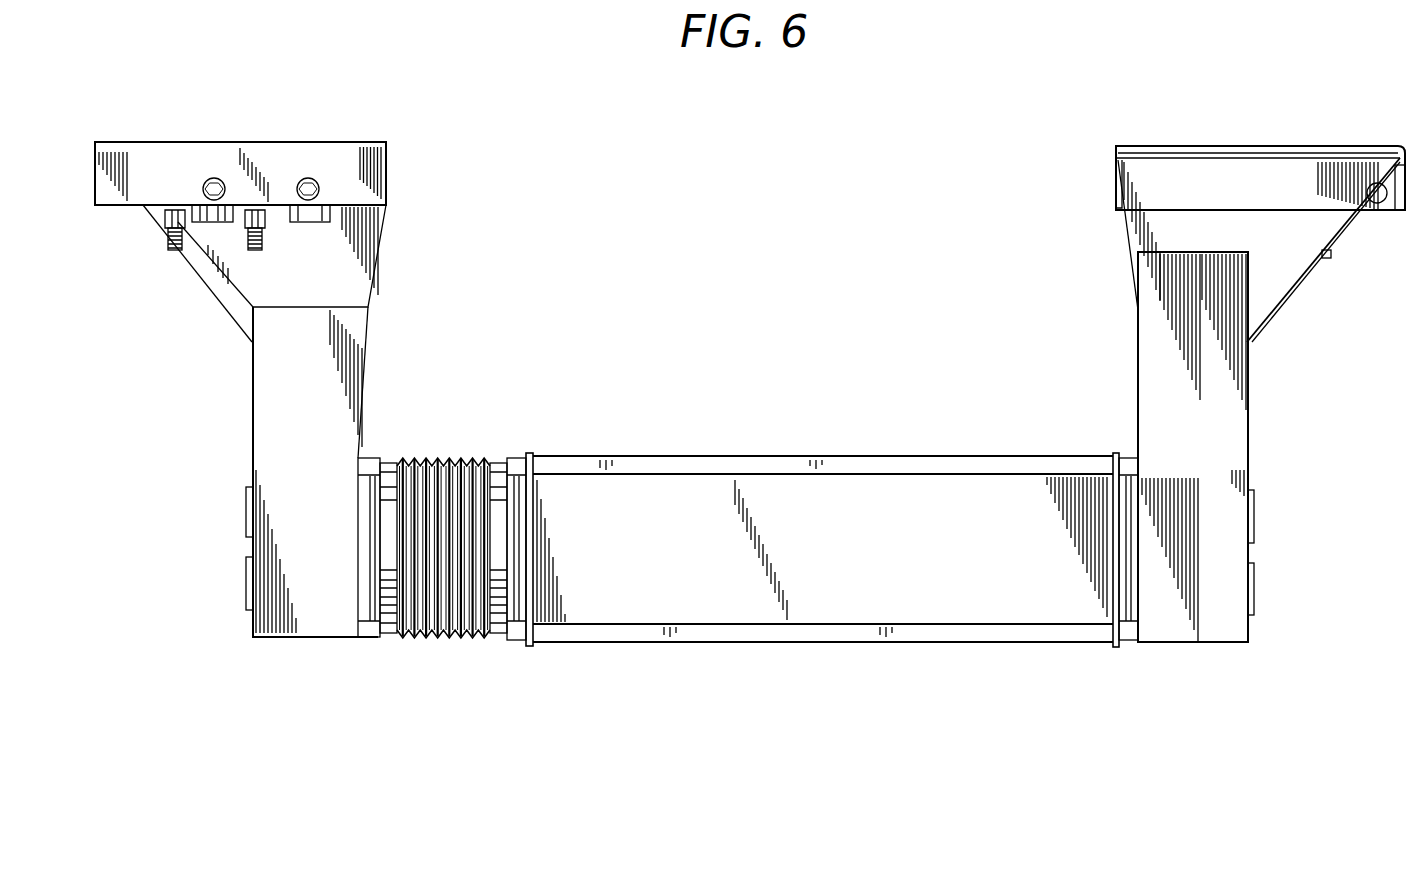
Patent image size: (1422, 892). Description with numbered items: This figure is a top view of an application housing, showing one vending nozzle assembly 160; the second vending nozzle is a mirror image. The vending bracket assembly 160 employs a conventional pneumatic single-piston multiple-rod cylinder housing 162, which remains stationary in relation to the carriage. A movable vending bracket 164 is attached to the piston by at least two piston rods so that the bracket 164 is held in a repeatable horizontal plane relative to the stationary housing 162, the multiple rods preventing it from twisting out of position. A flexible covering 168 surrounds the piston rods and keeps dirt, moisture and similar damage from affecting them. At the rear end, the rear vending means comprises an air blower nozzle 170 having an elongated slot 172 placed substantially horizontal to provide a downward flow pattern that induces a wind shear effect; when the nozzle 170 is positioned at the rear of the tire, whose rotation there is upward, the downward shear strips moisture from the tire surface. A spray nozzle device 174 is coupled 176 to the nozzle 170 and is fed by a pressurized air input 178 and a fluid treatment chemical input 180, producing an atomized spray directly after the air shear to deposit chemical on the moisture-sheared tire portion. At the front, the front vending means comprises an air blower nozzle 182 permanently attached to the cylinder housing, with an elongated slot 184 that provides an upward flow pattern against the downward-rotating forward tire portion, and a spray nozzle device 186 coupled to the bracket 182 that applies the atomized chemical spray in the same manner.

The vending nozzle assembly 160 is at (740, 660).
The cylinder housing 162 is at (1030, 613).
The movable vending bracket 164 is at (267, 645).
The flexible covering 168 is at (442, 637).
The air blower nozzle 170 is at (380, 223).
The elongated slot 172 is at (220, 138).
The spray nozzle device 174 is at (388, 170).
The coupling 176 is at (218, 182).
The pressurized air input 178 is at (253, 250).
The fluid treatment chemical input 180 is at (170, 250).
The air blower nozzle 182 is at (1132, 223).
The elongated slot 184 is at (1183, 145).
The spray nozzle device 186 is at (1395, 212).